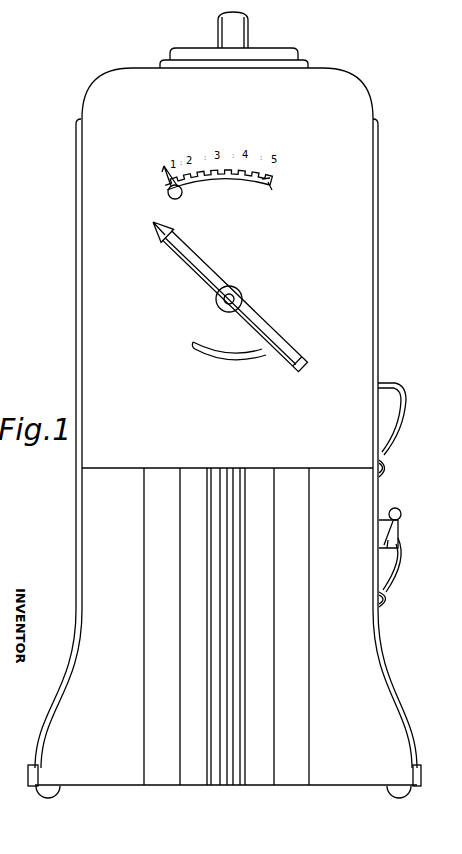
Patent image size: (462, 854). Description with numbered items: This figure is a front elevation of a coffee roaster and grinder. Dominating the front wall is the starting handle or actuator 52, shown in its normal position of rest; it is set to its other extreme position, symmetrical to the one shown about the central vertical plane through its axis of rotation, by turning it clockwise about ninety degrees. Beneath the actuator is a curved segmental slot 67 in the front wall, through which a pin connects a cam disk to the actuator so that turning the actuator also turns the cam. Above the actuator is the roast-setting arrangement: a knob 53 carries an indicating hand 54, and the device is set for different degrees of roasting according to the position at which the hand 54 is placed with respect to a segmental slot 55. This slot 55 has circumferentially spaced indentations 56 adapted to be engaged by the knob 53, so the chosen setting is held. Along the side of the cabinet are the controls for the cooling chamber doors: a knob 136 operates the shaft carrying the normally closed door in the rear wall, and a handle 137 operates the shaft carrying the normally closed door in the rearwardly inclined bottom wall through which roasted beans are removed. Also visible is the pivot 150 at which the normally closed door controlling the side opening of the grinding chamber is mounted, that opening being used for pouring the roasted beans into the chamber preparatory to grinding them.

The starting handle or actuator 52 is at (259, 318).
The knob 53 is at (186, 195).
The indicating hand 54 is at (164, 182).
The segmental slot 55 is at (271, 188).
The indentations 56 is at (270, 178).
The segmental slot 67 is at (229, 362).
The pivot 150 is at (387, 465).
The knob 136 is at (403, 533).
The handle 137 is at (403, 584).